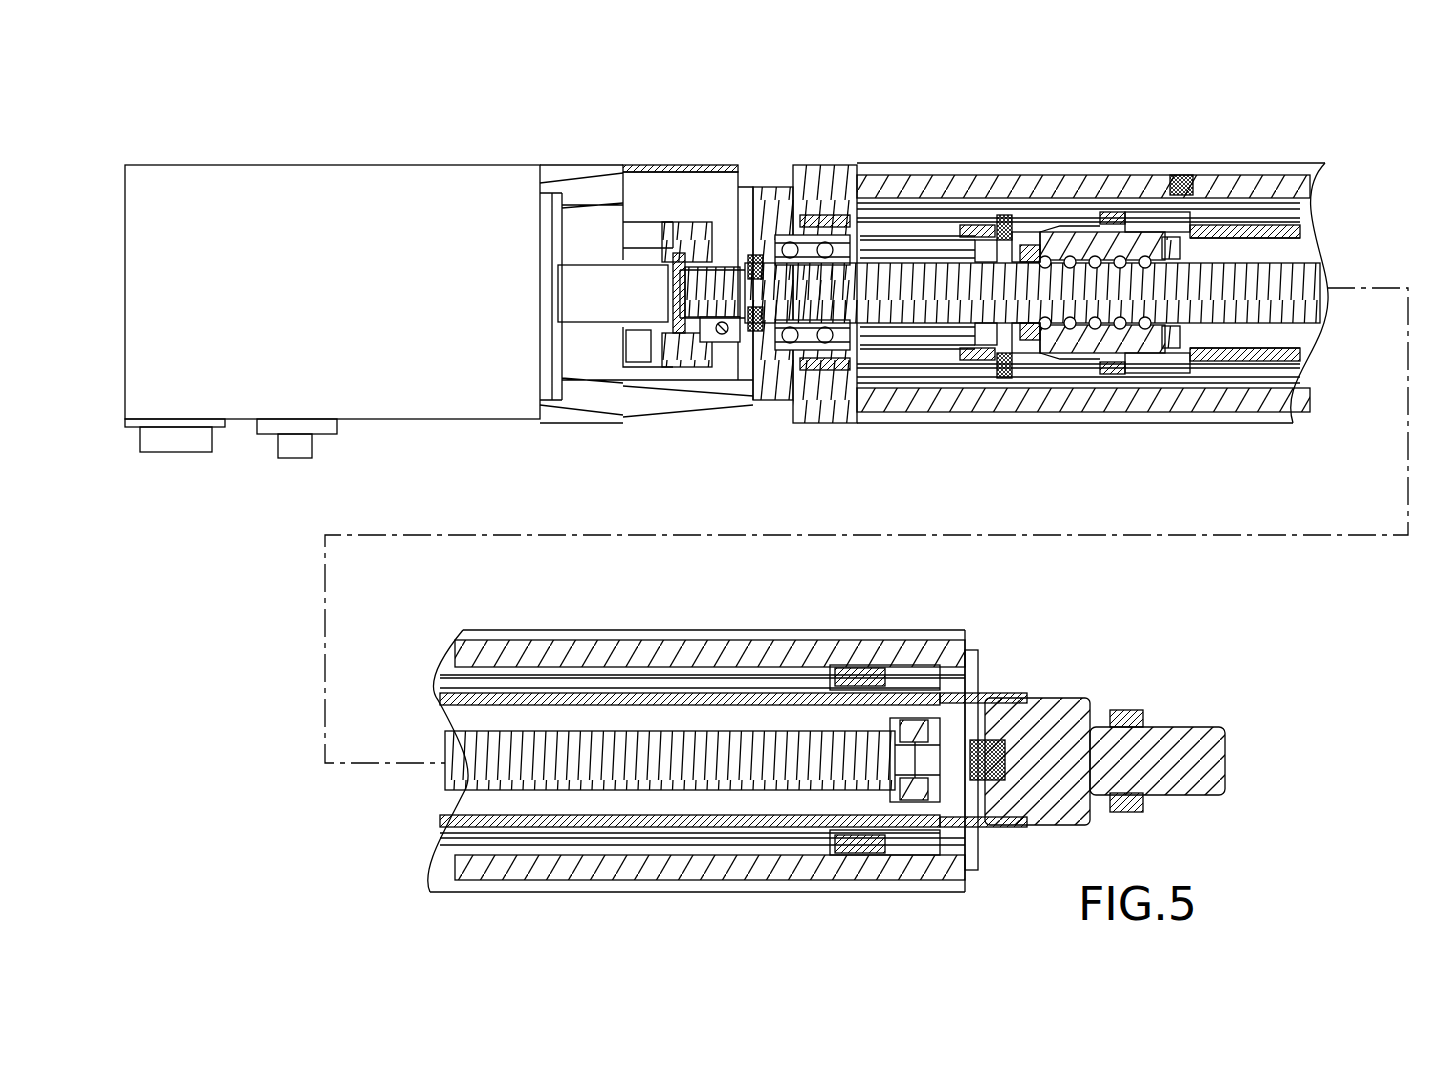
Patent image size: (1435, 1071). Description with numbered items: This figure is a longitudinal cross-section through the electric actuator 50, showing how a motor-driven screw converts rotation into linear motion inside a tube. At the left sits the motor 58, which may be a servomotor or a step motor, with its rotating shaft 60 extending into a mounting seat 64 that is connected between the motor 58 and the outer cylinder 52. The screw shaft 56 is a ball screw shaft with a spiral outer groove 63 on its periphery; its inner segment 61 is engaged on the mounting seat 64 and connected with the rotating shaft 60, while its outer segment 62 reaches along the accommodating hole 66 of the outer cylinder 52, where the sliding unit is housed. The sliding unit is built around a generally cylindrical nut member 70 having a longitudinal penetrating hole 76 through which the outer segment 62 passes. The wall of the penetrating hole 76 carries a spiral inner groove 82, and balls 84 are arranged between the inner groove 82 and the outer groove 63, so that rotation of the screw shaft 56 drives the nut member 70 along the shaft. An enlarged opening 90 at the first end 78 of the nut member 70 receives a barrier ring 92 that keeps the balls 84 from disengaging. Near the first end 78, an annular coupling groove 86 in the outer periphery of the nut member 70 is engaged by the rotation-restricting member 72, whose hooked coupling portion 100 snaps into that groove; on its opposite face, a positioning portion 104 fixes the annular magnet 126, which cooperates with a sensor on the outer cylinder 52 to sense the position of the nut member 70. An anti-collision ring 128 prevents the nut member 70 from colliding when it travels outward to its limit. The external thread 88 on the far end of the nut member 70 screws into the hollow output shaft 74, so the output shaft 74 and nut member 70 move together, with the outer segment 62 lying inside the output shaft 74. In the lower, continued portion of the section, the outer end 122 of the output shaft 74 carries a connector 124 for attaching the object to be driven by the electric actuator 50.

The electric actuator 50 is at (1257, 745).
The outer cylinder 52 is at (1086, 182).
The screw shaft 56 is at (550, 775).
The motor 58 is at (302, 182).
The rotating shaft 60 is at (598, 300).
The inner segment 61 is at (718, 300).
The outer segment 62 is at (683, 770).
The spiral outer groove 63 is at (1175, 368).
The mounting seat 64 is at (660, 168).
The accommodating hole 66 is at (903, 205).
The nut member 70 is at (1165, 240).
The rotation-restricting member 72 is at (1027, 368).
The output shaft 74 is at (578, 700).
The penetrating hole 76 is at (1135, 237).
The first end 78 is at (1003, 368).
The spiral inner groove 82 is at (1095, 368).
The balls 84 is at (1120, 368).
The coupling groove 86 is at (1060, 368).
The external thread 88 is at (1147, 368).
The enlarged opening 90 is at (1020, 232).
The barrier ring 92 is at (1028, 235).
The coupling portion 100 is at (1040, 368).
The positioning portion 104 is at (978, 368).
The outer end 122 is at (993, 697).
The connector 124 is at (1067, 707).
The annular magnet 126 is at (1000, 368).
The anti-collision ring 128 is at (1113, 237).